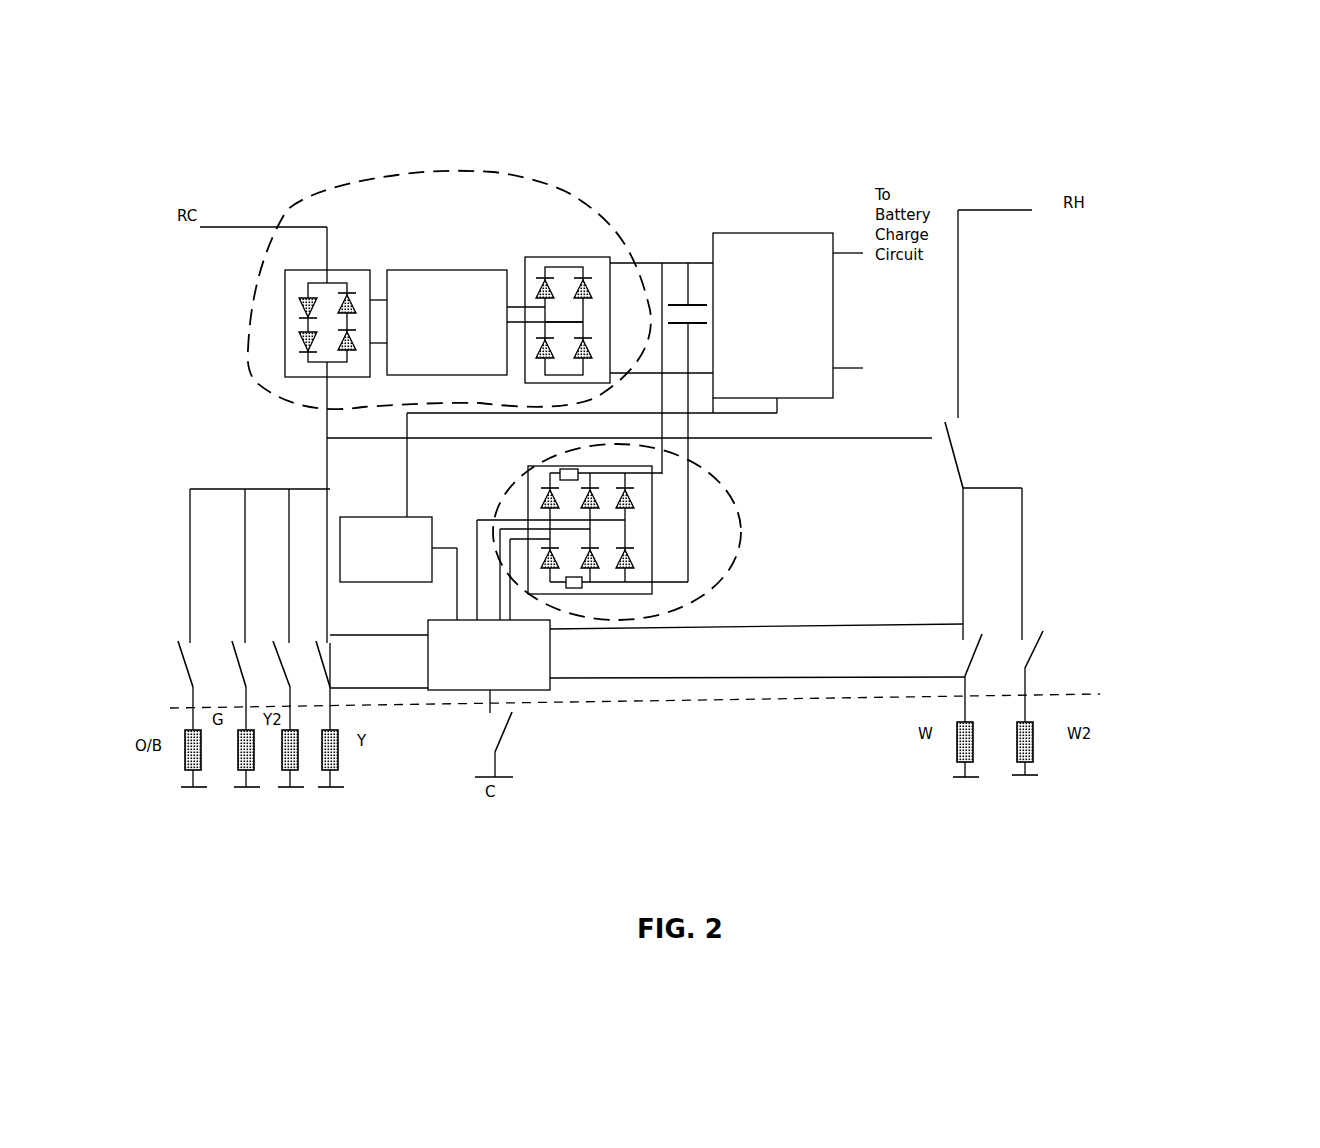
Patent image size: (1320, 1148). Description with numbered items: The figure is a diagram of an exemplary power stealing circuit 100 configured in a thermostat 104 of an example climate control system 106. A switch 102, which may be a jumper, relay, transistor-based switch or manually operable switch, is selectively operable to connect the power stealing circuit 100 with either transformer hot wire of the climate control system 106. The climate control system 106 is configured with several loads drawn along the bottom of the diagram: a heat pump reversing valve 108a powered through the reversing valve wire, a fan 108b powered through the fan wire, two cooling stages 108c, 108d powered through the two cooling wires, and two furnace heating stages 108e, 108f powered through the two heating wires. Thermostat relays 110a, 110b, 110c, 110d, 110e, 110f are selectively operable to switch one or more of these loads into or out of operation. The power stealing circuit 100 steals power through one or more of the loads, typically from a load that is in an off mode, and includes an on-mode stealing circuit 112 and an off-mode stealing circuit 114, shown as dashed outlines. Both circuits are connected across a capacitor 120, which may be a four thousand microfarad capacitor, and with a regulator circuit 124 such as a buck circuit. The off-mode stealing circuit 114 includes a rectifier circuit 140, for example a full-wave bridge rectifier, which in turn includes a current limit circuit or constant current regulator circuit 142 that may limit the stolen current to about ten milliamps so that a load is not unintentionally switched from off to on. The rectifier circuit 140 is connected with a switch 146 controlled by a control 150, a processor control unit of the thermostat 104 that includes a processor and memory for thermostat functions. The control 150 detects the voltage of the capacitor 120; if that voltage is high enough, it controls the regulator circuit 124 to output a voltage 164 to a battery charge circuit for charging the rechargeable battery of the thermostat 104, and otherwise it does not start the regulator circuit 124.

The power stealing circuit 100 is at (485, 98).
The switch 102 is at (958, 468).
The thermostat 104 is at (1172, 337).
The climate control system 106 is at (583, 805).
The heat pump reversing valve 108a is at (186, 768).
The fan 108b is at (238, 750).
The cooling stage 108c is at (293, 765).
The cooling stage 108d is at (338, 760).
The furnace heating stage 108e is at (957, 760).
The furnace heating stage 108f is at (1033, 752).
The thermostat relay 110a is at (182, 667).
The thermostat relay 110b is at (238, 669).
The thermostat relay 110c is at (287, 697).
The thermostat relay 110d is at (328, 672).
The thermostat relay 110e is at (975, 657).
The thermostat relay 110f is at (1033, 656).
The on-mode stealing circuit 112 is at (493, 172).
The off-mode stealing circuit 114 is at (768, 522).
The capacitor 120 is at (688, 305).
The regulator circuit 124 is at (773, 323).
The rectifier circuit 140 is at (653, 510).
The current limit circuit 142 is at (575, 592).
The switch 146 is at (489, 655).
The control 150 is at (407, 517).
The voltage 164 is at (870, 307).